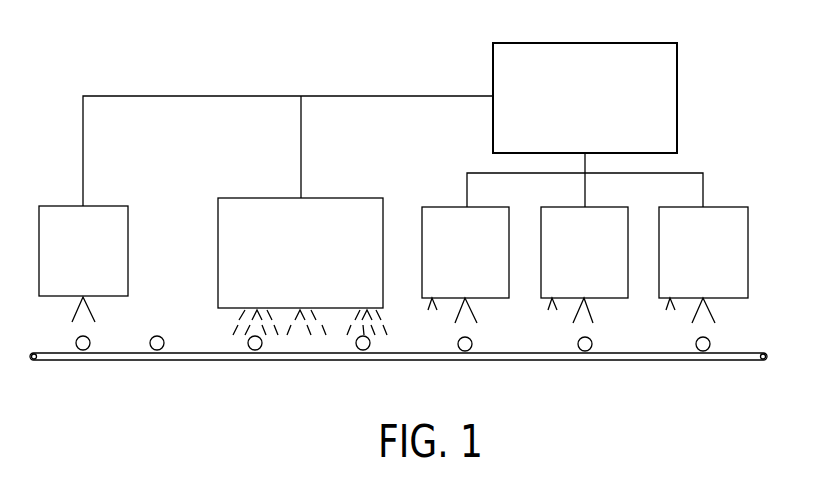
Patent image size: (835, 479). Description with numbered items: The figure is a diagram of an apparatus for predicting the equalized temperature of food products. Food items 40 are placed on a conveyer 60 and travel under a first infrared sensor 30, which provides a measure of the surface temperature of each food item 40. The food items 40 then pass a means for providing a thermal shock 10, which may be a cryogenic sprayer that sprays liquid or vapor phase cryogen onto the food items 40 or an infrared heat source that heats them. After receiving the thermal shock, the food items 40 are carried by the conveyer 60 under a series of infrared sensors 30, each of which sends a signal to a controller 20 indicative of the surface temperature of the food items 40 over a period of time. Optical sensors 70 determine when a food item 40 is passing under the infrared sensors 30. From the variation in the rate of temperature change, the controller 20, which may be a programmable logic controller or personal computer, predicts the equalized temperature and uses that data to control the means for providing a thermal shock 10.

The means for providing a thermal shock 10 is at (218, 245).
The controller 20 is at (677, 82).
The infrared sensor 30 is at (108, 206).
The food item 40 is at (91, 342).
The conveyer 60 is at (515, 362).
The optical sensor 70 is at (432, 298).